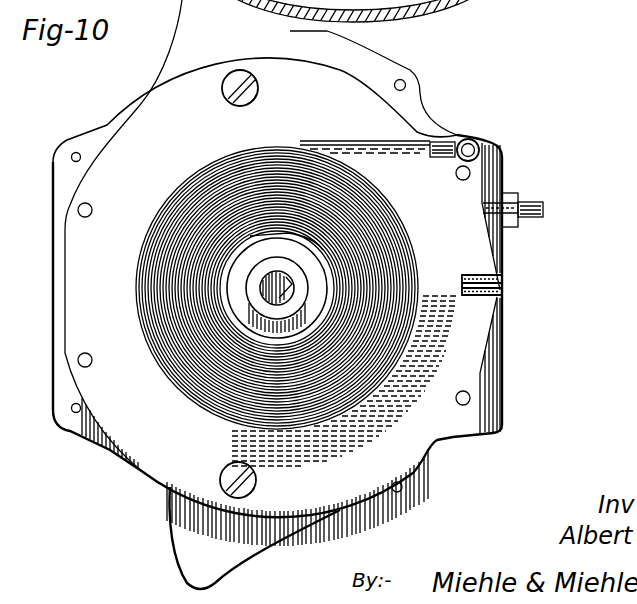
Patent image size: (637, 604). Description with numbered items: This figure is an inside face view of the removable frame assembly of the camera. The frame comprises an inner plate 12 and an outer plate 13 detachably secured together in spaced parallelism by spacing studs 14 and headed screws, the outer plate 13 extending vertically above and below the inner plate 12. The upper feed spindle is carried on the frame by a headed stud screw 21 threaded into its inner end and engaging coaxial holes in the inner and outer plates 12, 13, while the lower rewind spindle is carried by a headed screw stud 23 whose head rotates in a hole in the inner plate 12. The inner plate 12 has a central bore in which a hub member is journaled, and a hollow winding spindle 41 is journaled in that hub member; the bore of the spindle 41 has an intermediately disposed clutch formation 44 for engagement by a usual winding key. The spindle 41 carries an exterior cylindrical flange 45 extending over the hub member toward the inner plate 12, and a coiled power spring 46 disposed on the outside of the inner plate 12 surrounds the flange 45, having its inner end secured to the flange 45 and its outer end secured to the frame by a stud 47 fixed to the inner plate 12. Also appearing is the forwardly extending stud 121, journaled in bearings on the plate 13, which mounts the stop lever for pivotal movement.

The inner plate 12 is at (152, 112).
The outer plate 13 is at (415, 88).
The spacing studs 14 is at (77, 208).
The headed stud screw 21 is at (236, 80).
The headed screw stud 23 is at (227, 475).
The hollow winding spindle 41 is at (255, 292).
The clutch formation 44 is at (264, 300).
The exterior cylindrical flange 45 is at (225, 272).
The coiled power spring 46 is at (397, 245).
The stud 47 is at (477, 137).
The forwardly extending stud 121 is at (543, 203).